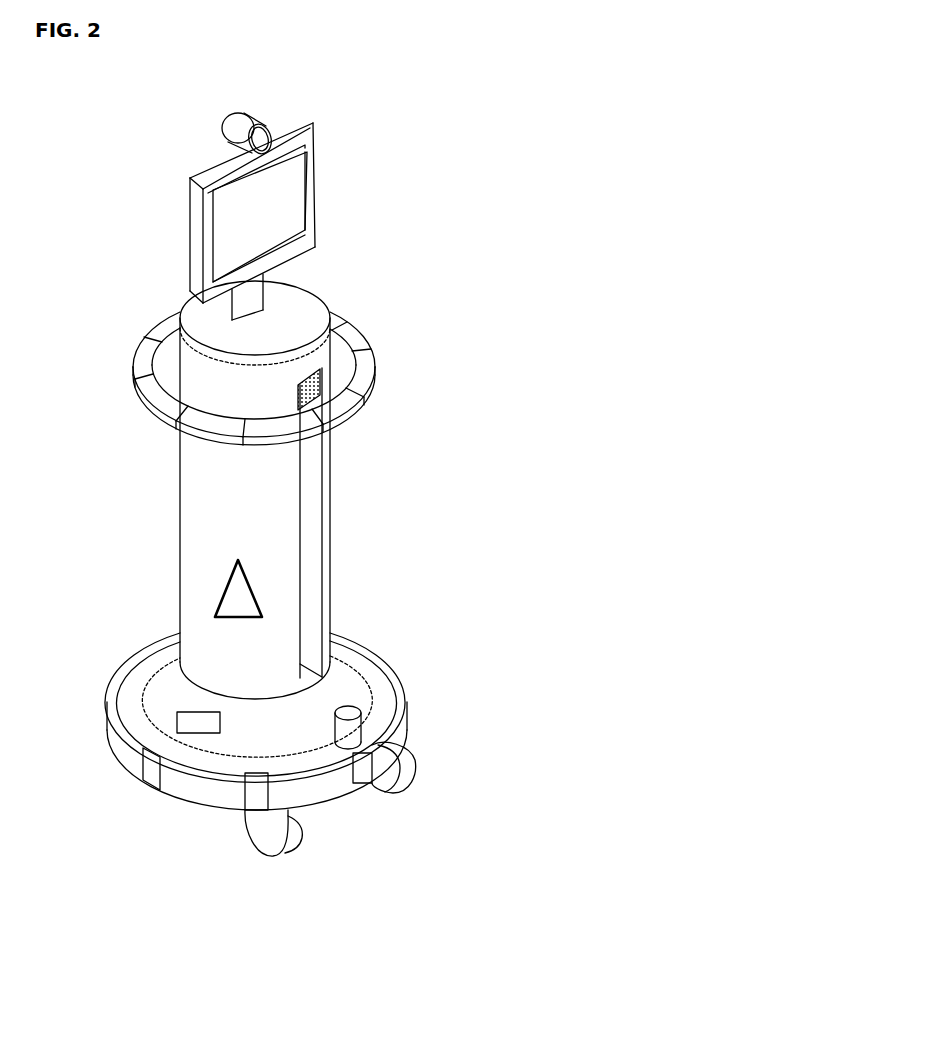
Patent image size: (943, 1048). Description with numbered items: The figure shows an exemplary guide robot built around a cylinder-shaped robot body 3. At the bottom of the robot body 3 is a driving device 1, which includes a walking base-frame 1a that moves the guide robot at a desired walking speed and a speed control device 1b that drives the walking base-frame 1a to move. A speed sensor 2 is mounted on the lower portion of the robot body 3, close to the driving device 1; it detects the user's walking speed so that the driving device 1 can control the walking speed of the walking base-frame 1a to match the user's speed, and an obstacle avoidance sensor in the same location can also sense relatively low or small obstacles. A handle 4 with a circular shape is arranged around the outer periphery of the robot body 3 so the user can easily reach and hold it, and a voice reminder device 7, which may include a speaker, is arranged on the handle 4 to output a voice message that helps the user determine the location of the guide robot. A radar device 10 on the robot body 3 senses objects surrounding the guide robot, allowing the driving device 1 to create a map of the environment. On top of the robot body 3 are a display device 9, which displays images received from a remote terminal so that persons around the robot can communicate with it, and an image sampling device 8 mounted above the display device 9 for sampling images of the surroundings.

The driving device 1 is at (461, 820).
The walking base-frame 1a is at (270, 782).
The speed control device 1b is at (205, 727).
The speed sensor 2 is at (345, 726).
The robot body 3 is at (253, 537).
The handle 4 is at (365, 332).
The voice reminder device 7 is at (323, 389).
The image sampling device 8 is at (268, 122).
The display device 9 is at (312, 216).
The radar device 10 is at (243, 599).